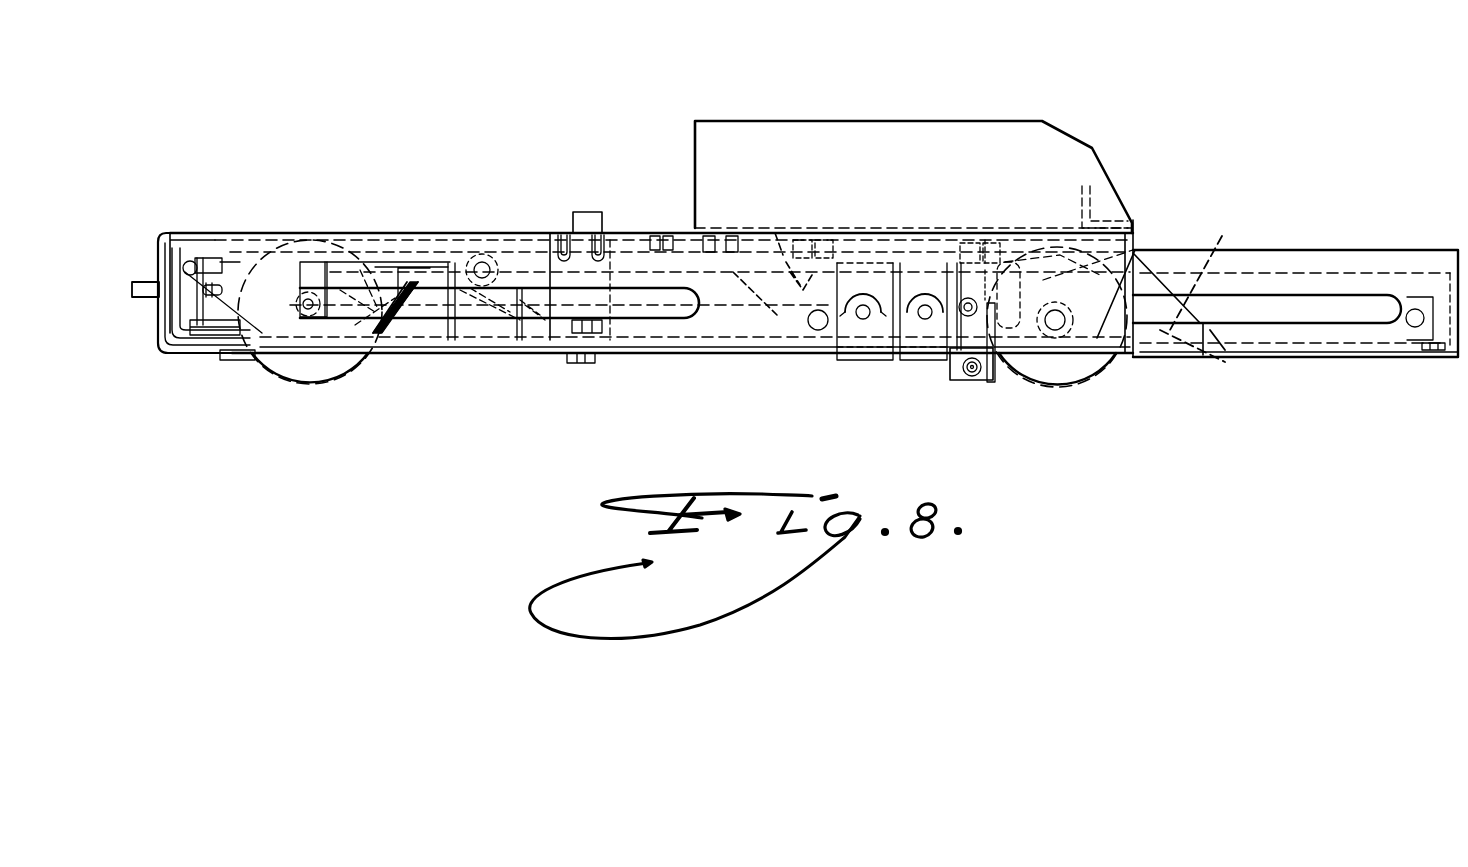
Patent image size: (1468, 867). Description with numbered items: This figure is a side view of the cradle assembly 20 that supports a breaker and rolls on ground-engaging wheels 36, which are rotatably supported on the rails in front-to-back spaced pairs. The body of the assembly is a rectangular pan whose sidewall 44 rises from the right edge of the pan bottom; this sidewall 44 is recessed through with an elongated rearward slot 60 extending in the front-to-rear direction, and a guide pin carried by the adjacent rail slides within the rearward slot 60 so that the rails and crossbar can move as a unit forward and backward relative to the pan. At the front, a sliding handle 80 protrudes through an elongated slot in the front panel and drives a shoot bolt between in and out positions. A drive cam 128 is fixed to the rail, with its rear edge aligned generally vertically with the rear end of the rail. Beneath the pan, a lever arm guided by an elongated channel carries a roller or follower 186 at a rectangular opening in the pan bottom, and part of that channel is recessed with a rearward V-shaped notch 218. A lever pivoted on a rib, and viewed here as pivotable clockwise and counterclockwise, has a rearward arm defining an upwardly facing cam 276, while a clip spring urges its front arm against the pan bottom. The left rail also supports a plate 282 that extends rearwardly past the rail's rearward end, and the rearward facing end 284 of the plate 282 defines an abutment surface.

The cradle assembly 20 is at (553, 71).
The wheel 36 is at (323, 375).
The sidewall 44 is at (1424, 262).
The rearward slot 60 is at (1343, 318).
The sliding handle 80 is at (148, 283).
The drive cam 128 is at (1063, 145).
The roller or follower 186 is at (985, 365).
The rearward V-shaped notch 218 is at (775, 230).
The cam 276 is at (590, 212).
The plate 282 is at (1222, 236).
The rearward facing end 284 is at (1225, 362).